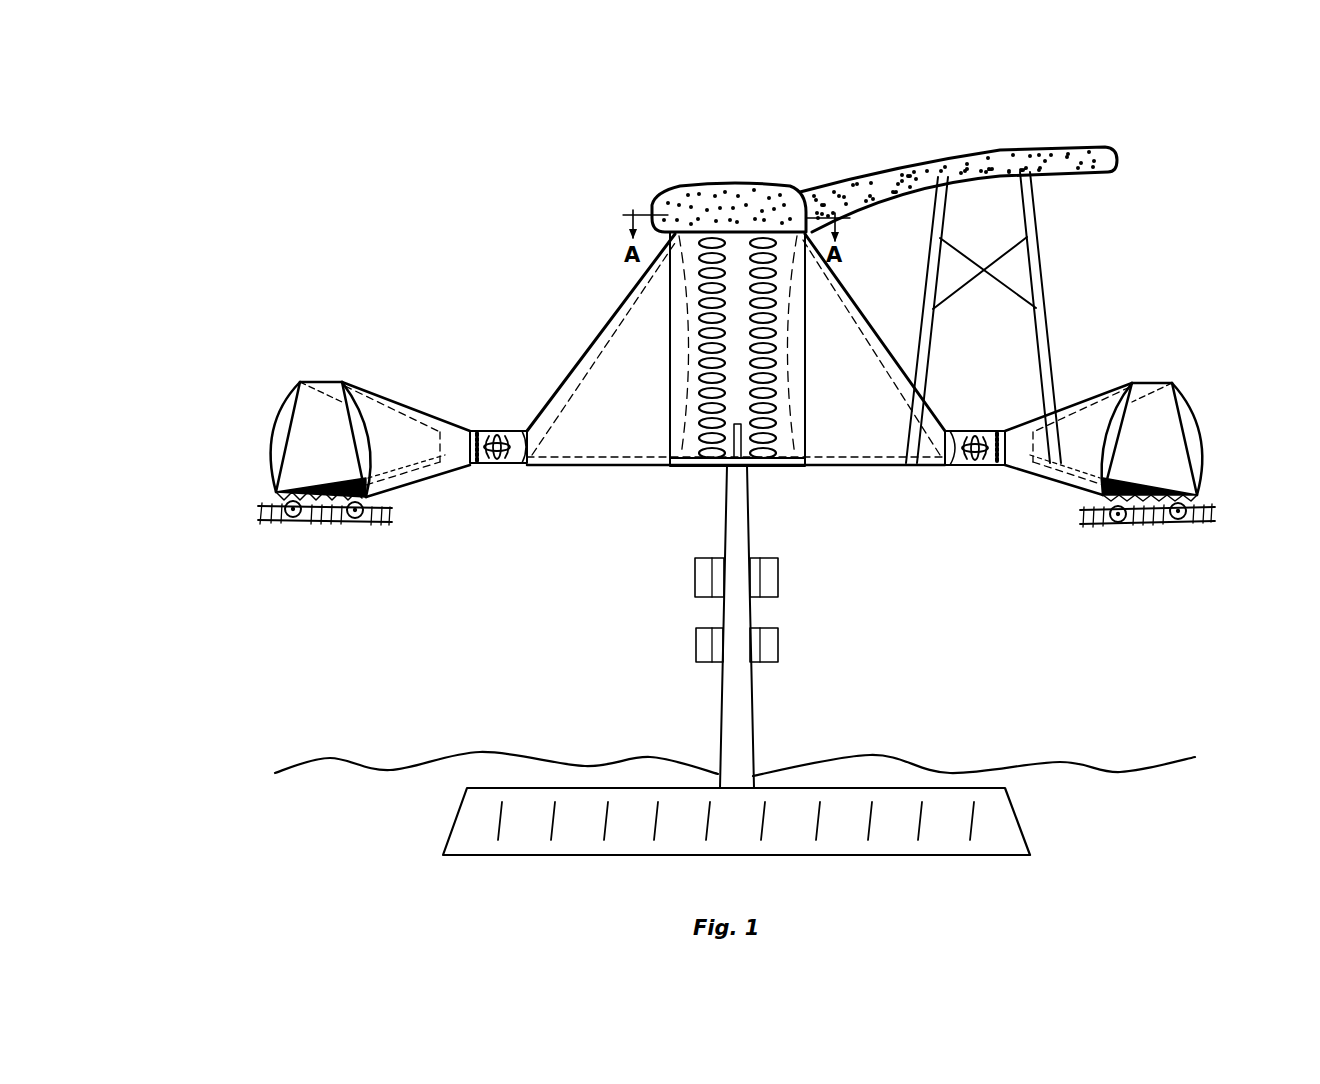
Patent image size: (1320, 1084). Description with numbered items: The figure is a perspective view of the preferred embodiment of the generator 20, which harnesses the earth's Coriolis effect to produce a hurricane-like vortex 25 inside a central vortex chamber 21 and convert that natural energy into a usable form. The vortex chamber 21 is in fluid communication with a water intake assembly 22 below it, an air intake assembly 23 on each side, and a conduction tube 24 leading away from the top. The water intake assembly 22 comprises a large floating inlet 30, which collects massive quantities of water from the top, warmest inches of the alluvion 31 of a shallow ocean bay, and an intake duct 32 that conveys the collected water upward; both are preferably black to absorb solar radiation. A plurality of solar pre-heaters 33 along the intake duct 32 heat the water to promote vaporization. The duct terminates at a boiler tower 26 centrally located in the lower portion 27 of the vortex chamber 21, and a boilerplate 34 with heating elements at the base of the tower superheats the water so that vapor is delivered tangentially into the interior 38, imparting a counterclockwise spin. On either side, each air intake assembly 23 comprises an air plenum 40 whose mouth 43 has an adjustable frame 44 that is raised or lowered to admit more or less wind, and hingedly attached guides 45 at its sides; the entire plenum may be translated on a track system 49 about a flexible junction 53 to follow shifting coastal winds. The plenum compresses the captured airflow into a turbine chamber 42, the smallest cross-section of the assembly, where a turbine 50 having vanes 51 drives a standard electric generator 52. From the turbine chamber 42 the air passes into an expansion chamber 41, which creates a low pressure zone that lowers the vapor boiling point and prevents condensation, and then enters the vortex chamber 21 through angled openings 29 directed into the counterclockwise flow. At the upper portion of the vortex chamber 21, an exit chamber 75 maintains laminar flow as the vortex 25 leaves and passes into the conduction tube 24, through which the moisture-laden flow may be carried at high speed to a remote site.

The generator 20 is at (440, 230).
The vortex chamber 21 is at (616, 259).
The water intake assembly 22 is at (840, 672).
The air intake assembly 23 is at (387, 381).
The conduction tube 24 is at (970, 148).
The vortex 25 is at (770, 308).
The boiler tower 26 is at (732, 464).
The lower portion 27 is at (660, 429).
The angled openings 29 is at (690, 331).
The floating inlet 30 is at (736, 821).
The alluvion 31 is at (735, 808).
The intake duct 32 is at (742, 691).
The pre-heaters 33 is at (693, 576).
The boilerplate 34 is at (672, 441).
The interior 38 is at (775, 440).
The air plenum 40 is at (1185, 470).
The expansion chamber 41 is at (774, 349).
The turbine chamber 42 is at (507, 422).
The mouth 43 is at (737, 441).
The adjustable frame 44 is at (272, 455).
The guides 45 is at (282, 420).
The track system 49 is at (323, 528).
The turbine 50 is at (504, 452).
The vanes 51 is at (493, 465).
The electric generator 52 is at (497, 432).
The flexible junction 53 is at (476, 468).
The exit chamber 75 is at (715, 198).